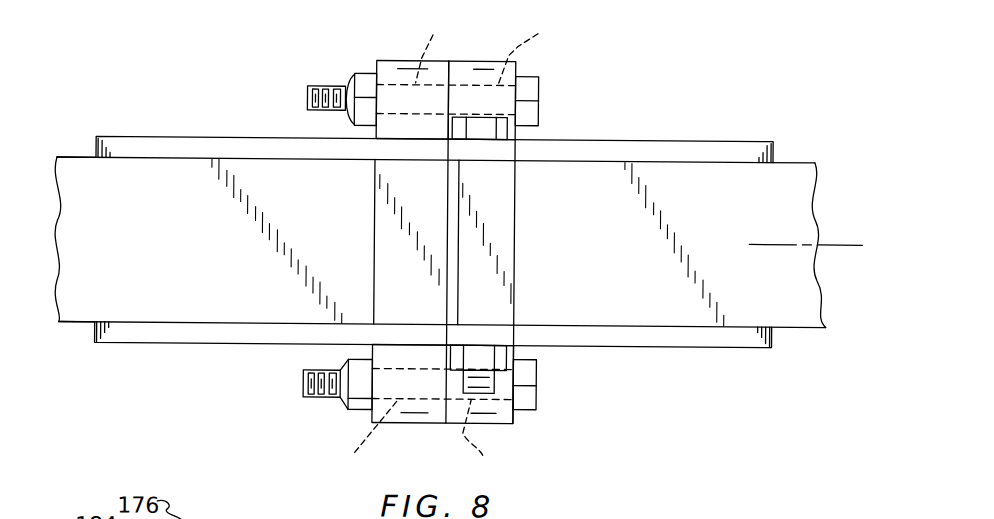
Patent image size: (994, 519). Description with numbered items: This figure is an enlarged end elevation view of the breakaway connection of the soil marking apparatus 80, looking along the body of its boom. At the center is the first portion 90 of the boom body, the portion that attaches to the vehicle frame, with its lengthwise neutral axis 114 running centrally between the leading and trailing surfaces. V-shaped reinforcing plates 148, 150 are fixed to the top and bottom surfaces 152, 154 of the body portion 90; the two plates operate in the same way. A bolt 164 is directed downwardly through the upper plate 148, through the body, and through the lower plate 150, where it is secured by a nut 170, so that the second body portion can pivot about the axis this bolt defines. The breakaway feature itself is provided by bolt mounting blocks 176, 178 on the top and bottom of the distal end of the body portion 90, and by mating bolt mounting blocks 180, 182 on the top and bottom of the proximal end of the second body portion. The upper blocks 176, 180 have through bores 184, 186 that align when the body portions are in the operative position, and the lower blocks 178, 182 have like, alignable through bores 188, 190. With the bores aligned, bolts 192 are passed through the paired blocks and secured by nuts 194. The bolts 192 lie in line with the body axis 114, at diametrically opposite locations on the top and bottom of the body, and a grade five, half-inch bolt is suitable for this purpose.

The apparatus for marking soil 80 is at (697, 114).
The first portion 90 is at (180, 253).
The neutral axis 114 is at (843, 239).
The reinforcing plate 148 is at (175, 136).
The reinforcing plate 150 is at (162, 342).
The top surface 152 is at (72, 155).
The bottom surface 154 is at (78, 323).
The bolt 164 is at (517, 123).
The nut 170 is at (500, 348).
The bolt mounting block 176 is at (400, 58).
The bolt mounting block 178 is at (427, 420).
The bolt mounting block 180 is at (489, 60).
The bolt mounting block 182 is at (503, 420).
The through bore 184 is at (444, 47).
The through bore 186 is at (543, 47).
The through bore 188 is at (362, 439).
The through bore 190 is at (481, 440).
The bolt 192 is at (538, 84).
The nut 194 is at (358, 76).